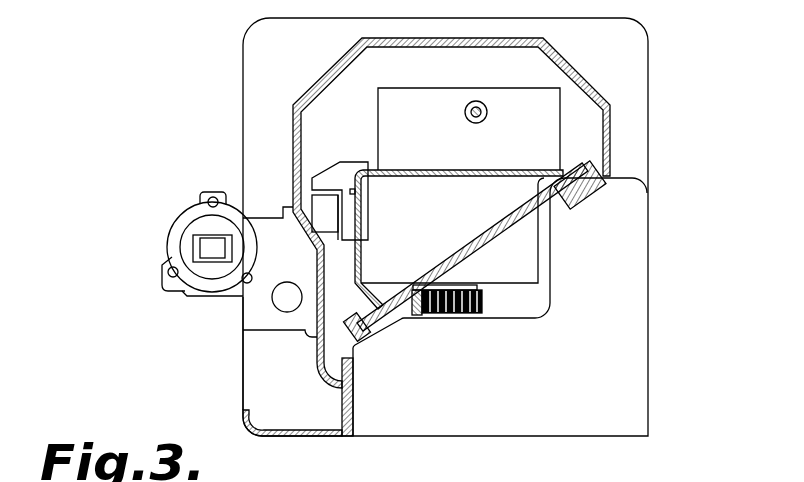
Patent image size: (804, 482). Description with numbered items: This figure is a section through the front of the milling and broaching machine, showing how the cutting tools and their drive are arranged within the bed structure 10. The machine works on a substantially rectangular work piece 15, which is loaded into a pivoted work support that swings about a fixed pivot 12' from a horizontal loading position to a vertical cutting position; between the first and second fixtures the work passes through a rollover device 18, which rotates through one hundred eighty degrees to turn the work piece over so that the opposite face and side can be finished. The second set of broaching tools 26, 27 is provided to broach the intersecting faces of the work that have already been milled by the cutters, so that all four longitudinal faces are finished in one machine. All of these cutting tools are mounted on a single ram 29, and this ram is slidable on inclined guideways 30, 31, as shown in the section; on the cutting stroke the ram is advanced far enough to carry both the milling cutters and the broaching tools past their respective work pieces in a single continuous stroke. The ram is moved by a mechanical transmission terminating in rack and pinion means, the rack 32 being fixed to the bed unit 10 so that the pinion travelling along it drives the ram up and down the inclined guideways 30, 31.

The bed structure 10 is at (641, 355).
The fixed pivot 12' is at (279, 326).
The work piece 15 is at (228, 248).
The rollover device 18 is at (255, 317).
The broaching tool 26 is at (337, 233).
The broaching tool 27 is at (325, 193).
The ram 29 is at (566, 170).
The inclined guideway 30 is at (377, 338).
The inclined guideway 31 is at (591, 192).
The rack 32 is at (425, 313).